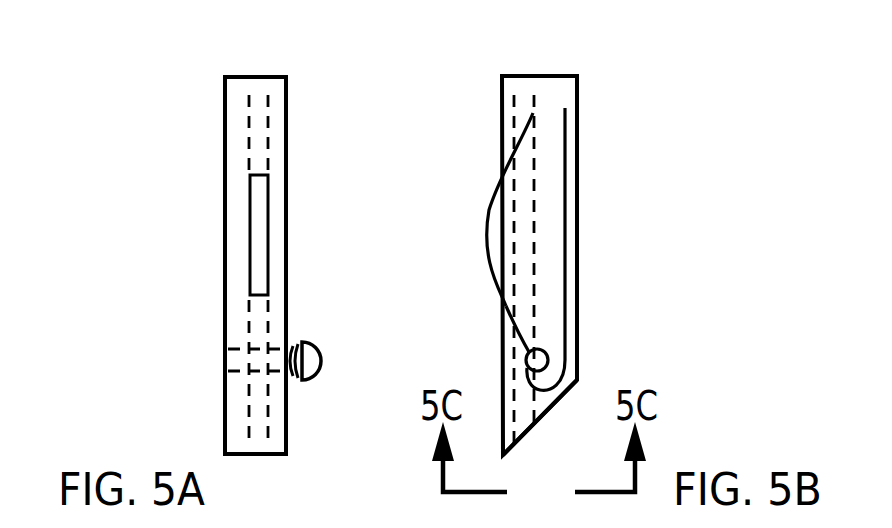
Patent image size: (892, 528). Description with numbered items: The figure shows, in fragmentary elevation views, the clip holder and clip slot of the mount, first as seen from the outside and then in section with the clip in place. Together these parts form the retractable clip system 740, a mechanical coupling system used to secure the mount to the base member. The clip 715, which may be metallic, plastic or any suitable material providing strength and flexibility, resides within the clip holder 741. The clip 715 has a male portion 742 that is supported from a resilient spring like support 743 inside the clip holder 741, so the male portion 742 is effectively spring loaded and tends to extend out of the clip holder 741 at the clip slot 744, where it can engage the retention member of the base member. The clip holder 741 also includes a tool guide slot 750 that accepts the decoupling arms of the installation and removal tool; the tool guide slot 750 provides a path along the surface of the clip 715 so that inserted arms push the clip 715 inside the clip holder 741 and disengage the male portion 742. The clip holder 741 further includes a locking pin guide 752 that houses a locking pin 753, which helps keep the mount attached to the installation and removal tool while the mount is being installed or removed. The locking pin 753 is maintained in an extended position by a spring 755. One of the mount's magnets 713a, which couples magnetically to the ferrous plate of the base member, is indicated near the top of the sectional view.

In FIG. 5B, the retractable clip system 740 is at (536, 252).
In FIG. 5A, the clip holder 741 is at (286, 114).
In FIG. 5B, the clip holder 741 is at (502, 95).
In FIG. 5B, the male portion 742 is at (488, 215).
In FIG. 5B, the resilient spring like support 743 is at (519, 328).
In FIG. 5A, the clip slot 744 is at (250, 242).
In FIG. 5A, the tool guide slot 750 is at (260, 458).
In FIG. 5B, the tool guide slot 750 is at (527, 440).
In FIG. 5B, the locking pin guide 752 is at (549, 361).
In FIG. 5A, the locking pin 753 is at (306, 343).
In FIG. 5A, the spring 755 is at (291, 378).
In FIG. 5B, the clip 715 is at (568, 338).
In FIG. 5B, the magnet 713a is at (454, 0).